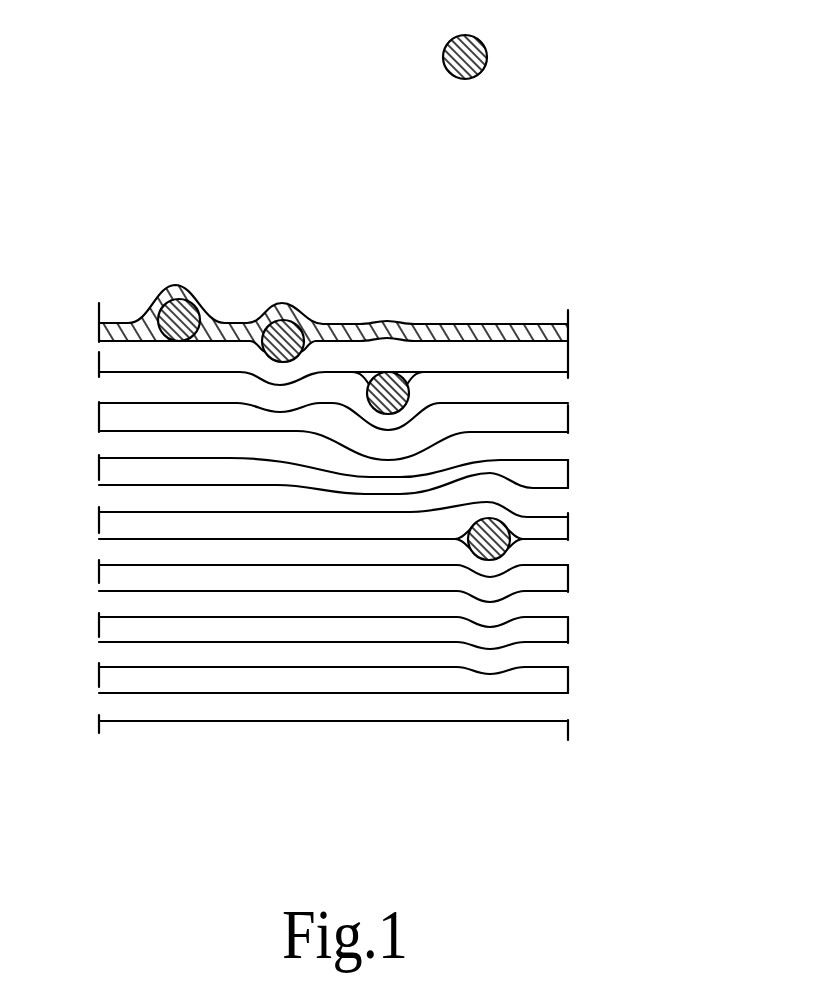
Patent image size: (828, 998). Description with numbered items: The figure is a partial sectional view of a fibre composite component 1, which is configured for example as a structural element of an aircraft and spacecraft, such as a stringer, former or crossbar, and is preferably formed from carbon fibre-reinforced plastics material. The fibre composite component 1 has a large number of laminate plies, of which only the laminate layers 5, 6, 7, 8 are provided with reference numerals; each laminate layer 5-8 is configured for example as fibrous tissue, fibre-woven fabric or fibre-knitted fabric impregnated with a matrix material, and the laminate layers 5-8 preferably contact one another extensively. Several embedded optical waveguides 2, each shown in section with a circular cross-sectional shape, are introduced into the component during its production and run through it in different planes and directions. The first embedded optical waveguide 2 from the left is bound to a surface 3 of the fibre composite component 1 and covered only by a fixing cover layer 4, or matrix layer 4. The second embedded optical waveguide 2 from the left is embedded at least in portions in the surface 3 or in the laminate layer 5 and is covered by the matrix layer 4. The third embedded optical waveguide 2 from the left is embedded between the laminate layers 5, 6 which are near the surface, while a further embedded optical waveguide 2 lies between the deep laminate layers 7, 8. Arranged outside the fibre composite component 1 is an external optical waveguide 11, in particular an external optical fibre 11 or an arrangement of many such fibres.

The fibre composite component 1 is at (190, 727).
The embedded optical waveguide 2 is at (180, 322).
The surface 3 is at (236, 323).
The fixing cover layer 4 is at (122, 322).
The laminate layer 5 is at (547, 358).
The laminate layer 6 is at (542, 388).
The laminate layer 7 is at (552, 530).
The laminate layer 8 is at (552, 550).
The external optical waveguide 11 is at (487, 47).